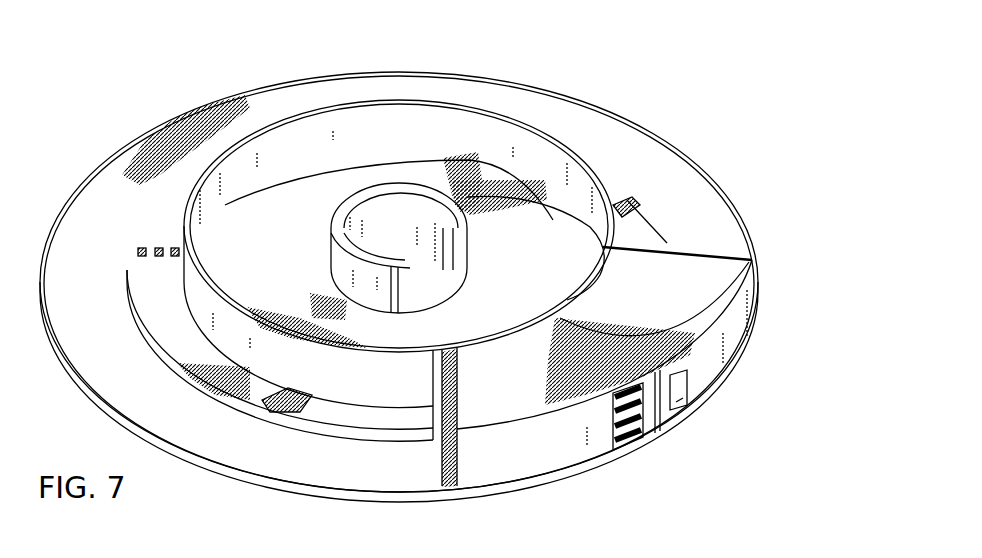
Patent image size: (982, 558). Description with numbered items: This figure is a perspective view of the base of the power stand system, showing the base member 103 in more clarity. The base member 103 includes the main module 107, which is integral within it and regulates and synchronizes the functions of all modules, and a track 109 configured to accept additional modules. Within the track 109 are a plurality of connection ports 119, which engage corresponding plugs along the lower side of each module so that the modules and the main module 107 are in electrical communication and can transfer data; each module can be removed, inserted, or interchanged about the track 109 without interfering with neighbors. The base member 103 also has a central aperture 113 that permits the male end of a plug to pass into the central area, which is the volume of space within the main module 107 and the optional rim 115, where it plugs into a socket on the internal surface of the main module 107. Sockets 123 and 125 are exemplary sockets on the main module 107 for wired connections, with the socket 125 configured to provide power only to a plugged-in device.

The base member 103 is at (700, 68).
The main module 107 is at (520, 390).
The track 109 is at (337, 478).
The central aperture 113 is at (434, 296).
The rim 115 is at (550, 133).
The connection ports 119 is at (142, 248).
The socket 123 is at (637, 437).
The socket 125 is at (677, 402).